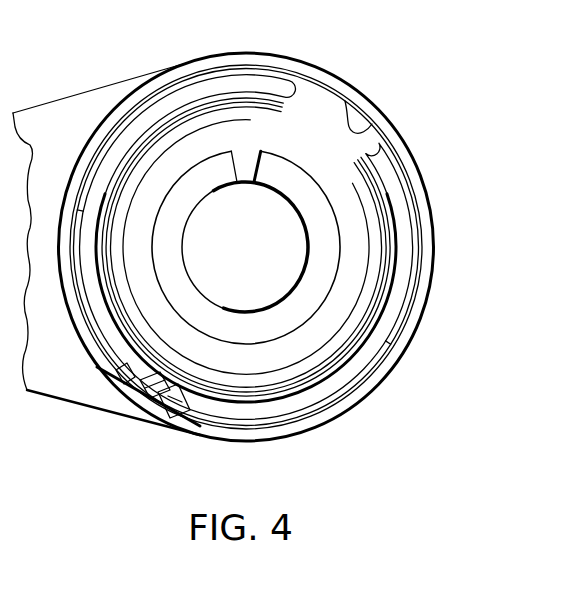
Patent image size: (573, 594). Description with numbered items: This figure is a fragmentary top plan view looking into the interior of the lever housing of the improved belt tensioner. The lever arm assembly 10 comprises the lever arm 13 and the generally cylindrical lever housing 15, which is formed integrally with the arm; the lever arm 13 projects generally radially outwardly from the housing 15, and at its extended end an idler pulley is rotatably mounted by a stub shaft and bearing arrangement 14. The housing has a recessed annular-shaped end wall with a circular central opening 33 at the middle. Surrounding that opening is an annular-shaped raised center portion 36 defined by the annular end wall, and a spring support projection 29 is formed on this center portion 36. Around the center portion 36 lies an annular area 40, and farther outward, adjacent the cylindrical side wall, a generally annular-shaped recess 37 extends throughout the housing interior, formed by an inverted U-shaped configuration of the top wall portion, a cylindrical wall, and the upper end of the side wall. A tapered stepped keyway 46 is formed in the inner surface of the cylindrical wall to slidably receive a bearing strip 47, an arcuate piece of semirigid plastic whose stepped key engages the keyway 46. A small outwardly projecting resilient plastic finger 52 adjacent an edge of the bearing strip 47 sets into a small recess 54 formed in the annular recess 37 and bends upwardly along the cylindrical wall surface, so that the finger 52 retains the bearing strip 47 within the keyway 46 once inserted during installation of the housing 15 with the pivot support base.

The lever arm assembly 10 is at (147, 60).
The lever arm 13 is at (73, 110).
The stub shaft and bearing arrangement 14 is at (353, 123).
The lever housing 15 is at (366, 83).
The spring support projection 29 is at (244, 163).
The circular central opening 33 is at (240, 312).
The raised center portion 36 is at (290, 183).
The annular recess 37 is at (336, 378).
The annular area 40 is at (350, 212).
The tapered stepped keyway 46 is at (150, 392).
The bearing strip 47 is at (92, 379).
The resilient plastic finger 52 is at (176, 405).
The small recess 54 is at (122, 384).